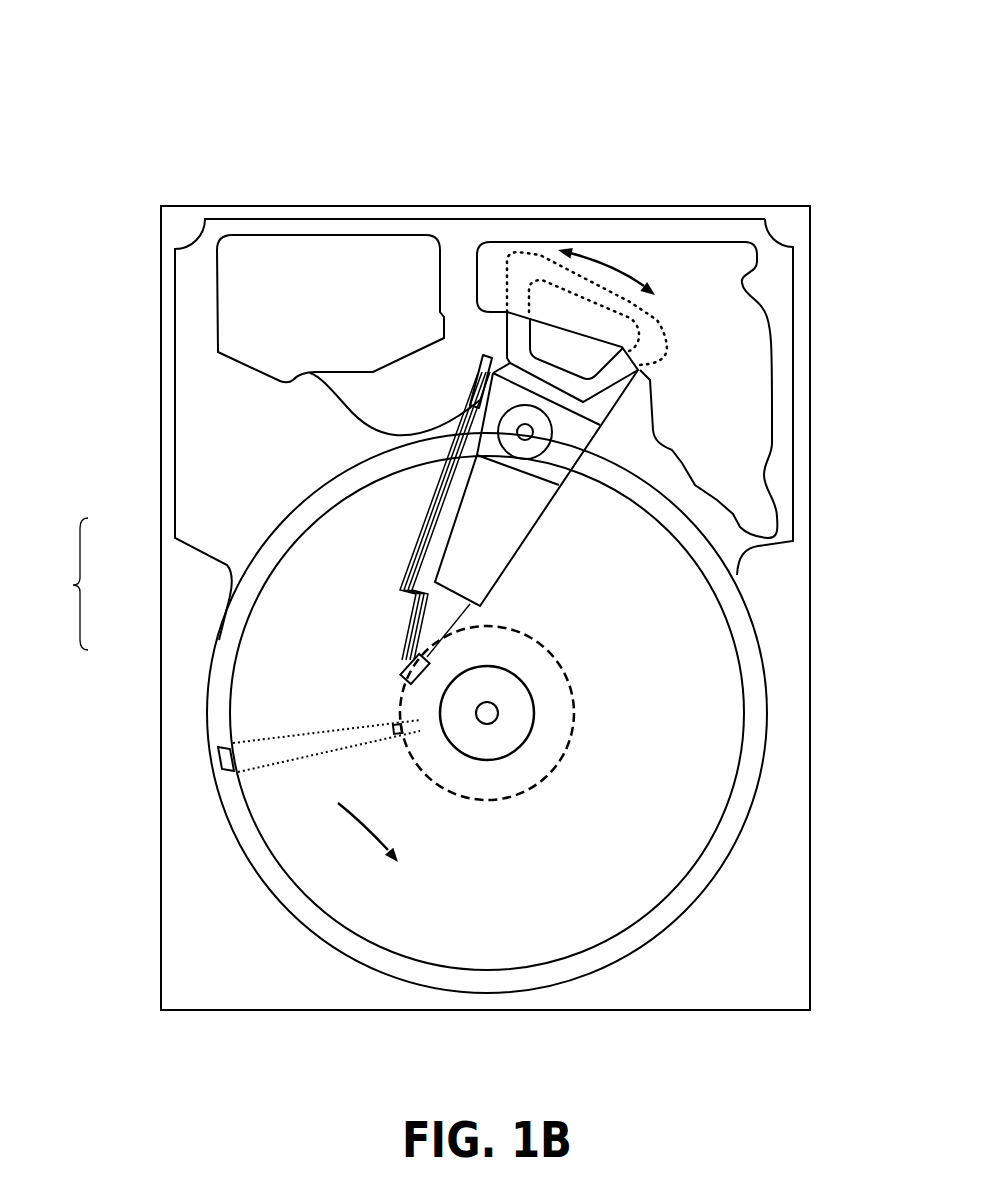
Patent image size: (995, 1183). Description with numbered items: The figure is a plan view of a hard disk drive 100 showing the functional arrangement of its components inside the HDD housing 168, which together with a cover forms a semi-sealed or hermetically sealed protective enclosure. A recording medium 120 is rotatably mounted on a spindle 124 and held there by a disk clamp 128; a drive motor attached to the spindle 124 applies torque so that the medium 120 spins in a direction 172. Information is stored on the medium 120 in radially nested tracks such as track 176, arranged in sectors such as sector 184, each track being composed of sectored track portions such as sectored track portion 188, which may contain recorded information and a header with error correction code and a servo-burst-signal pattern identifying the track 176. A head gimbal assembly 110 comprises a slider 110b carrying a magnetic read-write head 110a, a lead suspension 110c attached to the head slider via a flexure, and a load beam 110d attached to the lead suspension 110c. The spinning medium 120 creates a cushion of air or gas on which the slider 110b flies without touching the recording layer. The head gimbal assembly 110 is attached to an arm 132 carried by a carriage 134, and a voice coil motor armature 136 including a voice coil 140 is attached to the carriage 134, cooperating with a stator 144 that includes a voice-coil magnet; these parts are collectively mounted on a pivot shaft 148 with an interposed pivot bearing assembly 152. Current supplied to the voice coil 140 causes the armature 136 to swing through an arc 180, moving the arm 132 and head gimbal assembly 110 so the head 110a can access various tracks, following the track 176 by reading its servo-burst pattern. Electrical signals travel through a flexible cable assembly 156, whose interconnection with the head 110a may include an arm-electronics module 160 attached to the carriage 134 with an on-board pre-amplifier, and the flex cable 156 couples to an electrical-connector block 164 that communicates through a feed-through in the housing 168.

The hard disk drive 100 is at (86, 78).
The head gimbal assembly 110 is at (54, 584).
The magnetic read-write head 110a is at (400, 682).
The slider 110b is at (412, 660).
The lead suspension 110c is at (427, 618).
The load beam 110d is at (410, 587).
The recording medium 120 is at (668, 665).
The spindle 124 is at (498, 712).
The disk clamp 128 is at (514, 732).
The arm 132 is at (477, 548).
The carriage 134 is at (543, 463).
The armature 136 is at (504, 352).
The voice coil 140 is at (520, 324).
The stator 144 is at (737, 333).
The pivot shaft 148 is at (533, 431).
The pivot bearing assembly 152 is at (543, 448).
The flexible cable assembly 156 is at (345, 409).
The arm-electronics module 160 is at (480, 400).
The electrical-connector block 164 is at (242, 307).
The HDD housing 168 is at (790, 217).
The direction 172 is at (374, 841).
The track 176 is at (560, 673).
The arc 180 is at (605, 262).
The sector 184 is at (218, 752).
The sectored track portion 188 is at (392, 726).